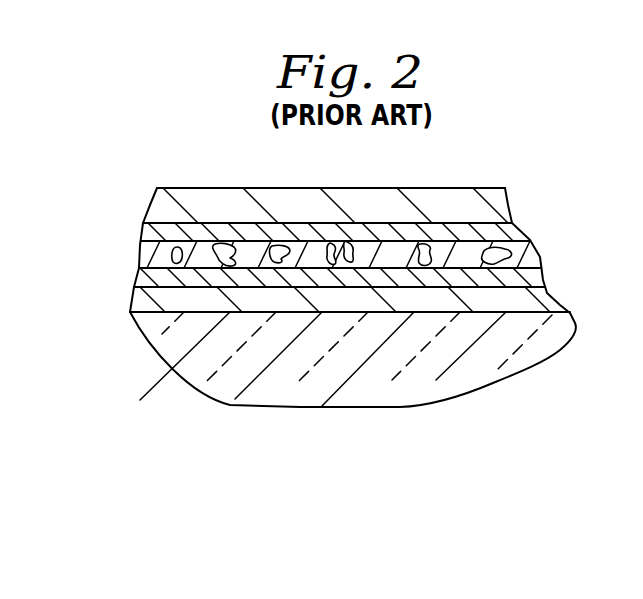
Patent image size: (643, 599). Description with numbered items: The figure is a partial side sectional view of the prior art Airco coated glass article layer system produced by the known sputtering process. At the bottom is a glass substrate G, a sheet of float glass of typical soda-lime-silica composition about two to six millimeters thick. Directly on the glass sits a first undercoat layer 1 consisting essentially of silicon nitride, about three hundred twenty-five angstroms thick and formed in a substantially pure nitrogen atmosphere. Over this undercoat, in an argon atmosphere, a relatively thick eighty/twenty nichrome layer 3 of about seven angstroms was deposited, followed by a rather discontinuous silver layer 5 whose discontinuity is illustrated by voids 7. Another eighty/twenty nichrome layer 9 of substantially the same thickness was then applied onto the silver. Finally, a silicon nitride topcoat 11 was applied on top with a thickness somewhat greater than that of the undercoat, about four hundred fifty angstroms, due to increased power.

The glass substrate G is at (492, 381).
The first undercoat layer 1 is at (553, 299).
The nichrome layer 3 is at (138, 277).
The silver layer 5 is at (533, 253).
The voids 7 is at (347, 262).
The nichrome layer 9 is at (145, 232).
The topcoat 11 is at (500, 203).